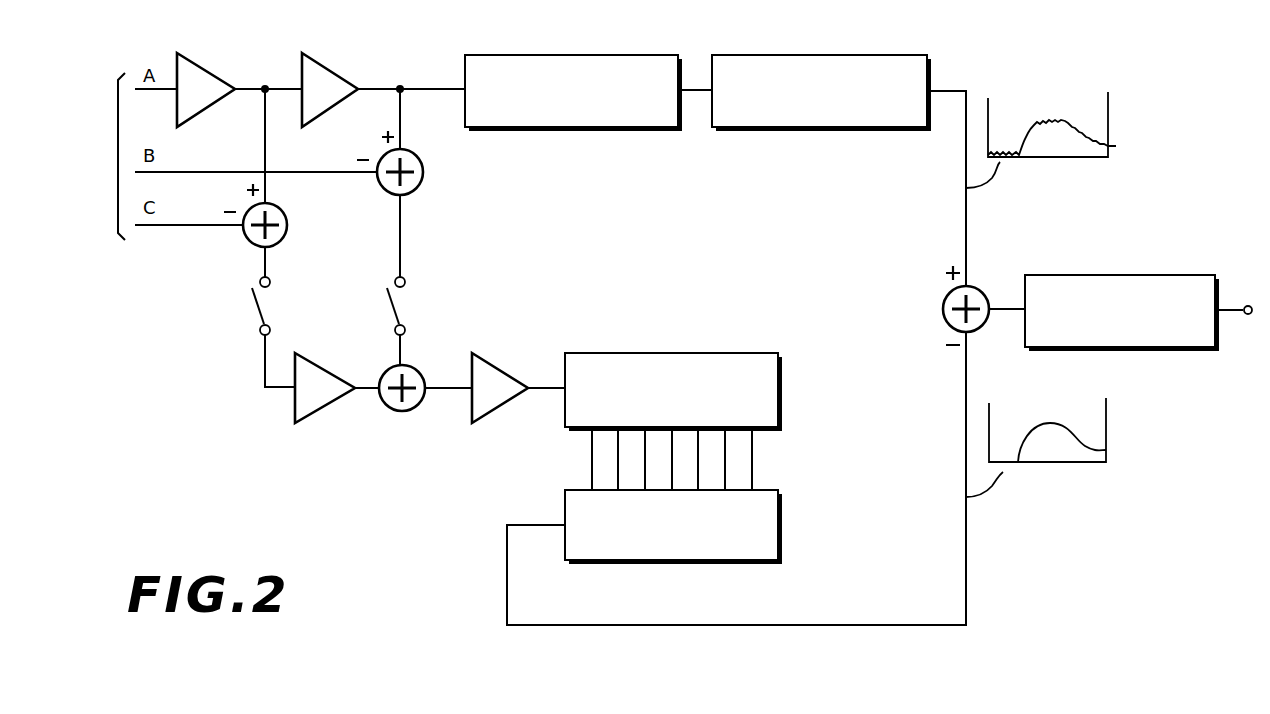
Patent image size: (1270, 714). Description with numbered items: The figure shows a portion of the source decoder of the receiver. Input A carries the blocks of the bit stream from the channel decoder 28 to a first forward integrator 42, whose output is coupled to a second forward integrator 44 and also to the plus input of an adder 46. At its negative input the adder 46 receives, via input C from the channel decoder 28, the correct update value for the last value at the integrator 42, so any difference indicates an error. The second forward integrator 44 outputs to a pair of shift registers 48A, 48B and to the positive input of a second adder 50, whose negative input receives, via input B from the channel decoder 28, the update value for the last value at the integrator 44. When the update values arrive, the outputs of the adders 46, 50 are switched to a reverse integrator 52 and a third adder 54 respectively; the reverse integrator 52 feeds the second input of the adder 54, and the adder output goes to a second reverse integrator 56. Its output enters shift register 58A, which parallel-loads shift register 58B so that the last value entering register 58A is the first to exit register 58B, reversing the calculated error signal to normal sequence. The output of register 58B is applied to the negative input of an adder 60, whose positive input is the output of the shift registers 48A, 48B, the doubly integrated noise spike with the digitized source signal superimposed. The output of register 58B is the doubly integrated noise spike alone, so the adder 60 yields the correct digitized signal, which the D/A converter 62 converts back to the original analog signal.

The channel decoder 28 is at (89, 156).
The first forward integrator 42 is at (205, 62).
The second forward integrator 44 is at (330, 62).
The adder 46 is at (288, 228).
The shift register 48A is at (573, 55).
The shift register 48B is at (820, 55).
The second adder 50 is at (423, 173).
The reverse integrator 52 is at (323, 368).
The third adder 54 is at (402, 411).
The second reverse integrator 56 is at (500, 368).
The shift register 58A is at (673, 353).
The shift register 58B is at (782, 524).
The adder 60 is at (943, 310).
The digital-to-analog converter 62 is at (1113, 275).